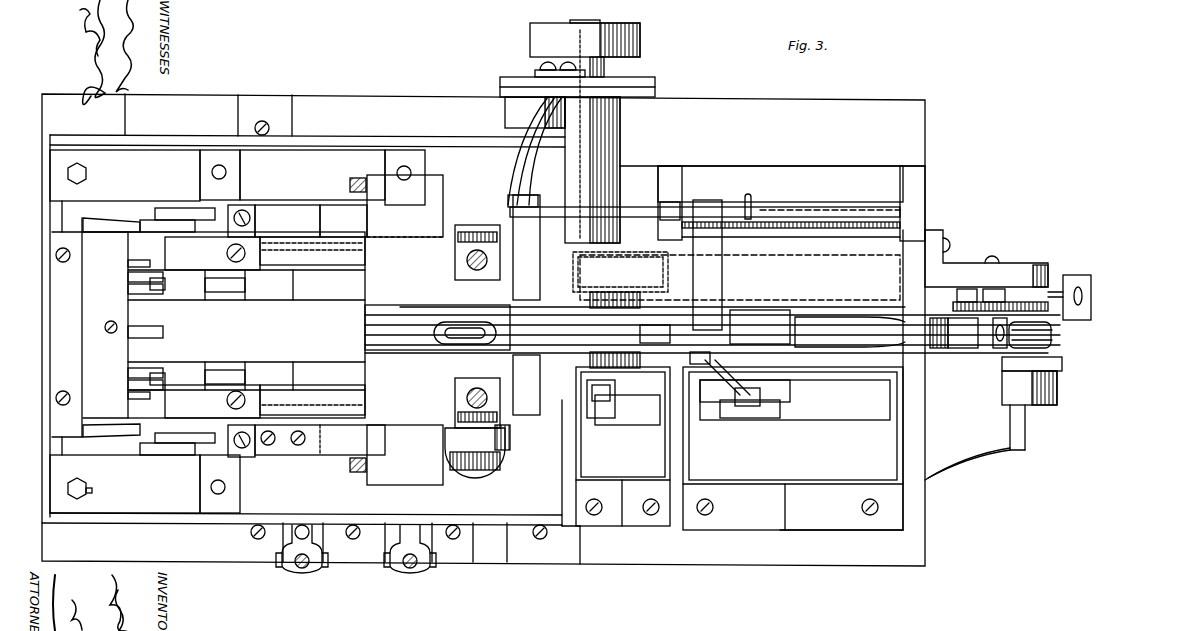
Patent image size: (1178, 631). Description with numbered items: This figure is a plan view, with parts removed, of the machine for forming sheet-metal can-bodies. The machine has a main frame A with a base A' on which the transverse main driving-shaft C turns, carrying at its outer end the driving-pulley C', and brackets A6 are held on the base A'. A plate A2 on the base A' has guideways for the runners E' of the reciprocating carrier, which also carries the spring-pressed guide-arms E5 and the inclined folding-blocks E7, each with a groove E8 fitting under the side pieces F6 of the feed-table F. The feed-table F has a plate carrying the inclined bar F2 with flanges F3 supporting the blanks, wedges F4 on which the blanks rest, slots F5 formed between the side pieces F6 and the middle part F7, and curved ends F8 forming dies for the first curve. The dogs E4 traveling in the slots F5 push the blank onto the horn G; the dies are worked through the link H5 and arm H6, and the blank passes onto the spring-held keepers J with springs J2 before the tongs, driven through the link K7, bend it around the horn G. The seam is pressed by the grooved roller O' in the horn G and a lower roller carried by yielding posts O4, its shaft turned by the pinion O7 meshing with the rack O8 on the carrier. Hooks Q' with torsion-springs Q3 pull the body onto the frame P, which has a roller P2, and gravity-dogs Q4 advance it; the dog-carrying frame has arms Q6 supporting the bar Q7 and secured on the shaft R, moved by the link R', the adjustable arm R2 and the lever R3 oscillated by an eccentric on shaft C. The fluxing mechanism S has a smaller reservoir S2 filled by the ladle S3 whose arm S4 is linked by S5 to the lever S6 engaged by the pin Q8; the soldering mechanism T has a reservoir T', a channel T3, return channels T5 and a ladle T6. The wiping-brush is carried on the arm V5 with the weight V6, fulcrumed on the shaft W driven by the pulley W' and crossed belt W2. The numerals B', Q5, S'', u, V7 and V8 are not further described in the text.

The main frame A is at (483, 323).
The base A' is at (772, 147).
The plate A2 is at (312, 324).
The brackets A6 is at (791, 348).
The bolt B' is at (93, 496).
The main driving-shaft C is at (593, 136).
The driving-pulley C' is at (585, 48).
The runner E' is at (125, 331).
The dogs E4 is at (240, 330).
The spring-pressed arm E5 is at (172, 210).
The folding-blocks E7 is at (255, 222).
The groove E8 is at (220, 484).
The feed-table F is at (67, 327).
The transversely-extending bar F2 is at (141, 347).
The flanges F3 is at (135, 327).
The wedges F4 is at (159, 323).
The longitudinally-extending slots F5 is at (182, 331).
The side pieces F6 is at (212, 327).
The middle part F7 is at (246, 325).
The curved ends F8 is at (312, 326).
The horn G is at (343, 328).
The link H5 is at (302, 570).
The arm H6 is at (282, 536).
The keepers J is at (405, 330).
The spring J2 is at (355, 325).
The link K7 is at (410, 570).
The grooved roller O' is at (457, 325).
The yielding posts O4 is at (467, 260).
The pinion O7 is at (512, 440).
The rack O8 is at (475, 453).
The frame P is at (932, 318).
The roller P2 is at (1055, 334).
The hooks Q' is at (522, 305).
The torsion-spring Q3 is at (612, 292).
The gravity-dogs Q4 is at (650, 330).
The rod Q5 is at (833, 330).
The transversely-extending arms Q6 is at (638, 265).
The longitudinally-extending bar Q7 is at (740, 277).
The pin Q8 is at (693, 362).
The shaft R is at (791, 208).
The link R' is at (705, 195).
The arm R2 is at (515, 170).
The lever R3 is at (640, 82).
The fluxing mechanism S is at (623, 446).
The box part S'' is at (597, 457).
The smaller reservoir S2 is at (627, 421).
The ladle S3 is at (601, 409).
The arm S4 is at (603, 400).
The link S5 is at (727, 388).
The lever S6 is at (747, 386).
The soldering mechanism T is at (793, 448).
The reservoir T' is at (795, 411).
The channel T3 is at (795, 398).
The channels T5 is at (787, 402).
The ladle T6 is at (750, 418).
The shaft u is at (730, 330).
The arm V5 is at (1012, 300).
The weight V6 is at (1085, 285).
The rack V7 is at (958, 300).
The pin V8 is at (1085, 296).
The shaft W is at (1048, 359).
The pulley W' is at (975, 442).
The crossed belt W2 is at (1058, 392).